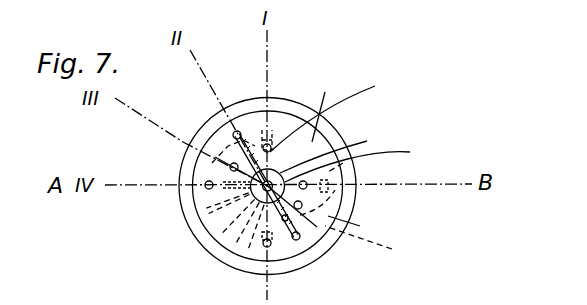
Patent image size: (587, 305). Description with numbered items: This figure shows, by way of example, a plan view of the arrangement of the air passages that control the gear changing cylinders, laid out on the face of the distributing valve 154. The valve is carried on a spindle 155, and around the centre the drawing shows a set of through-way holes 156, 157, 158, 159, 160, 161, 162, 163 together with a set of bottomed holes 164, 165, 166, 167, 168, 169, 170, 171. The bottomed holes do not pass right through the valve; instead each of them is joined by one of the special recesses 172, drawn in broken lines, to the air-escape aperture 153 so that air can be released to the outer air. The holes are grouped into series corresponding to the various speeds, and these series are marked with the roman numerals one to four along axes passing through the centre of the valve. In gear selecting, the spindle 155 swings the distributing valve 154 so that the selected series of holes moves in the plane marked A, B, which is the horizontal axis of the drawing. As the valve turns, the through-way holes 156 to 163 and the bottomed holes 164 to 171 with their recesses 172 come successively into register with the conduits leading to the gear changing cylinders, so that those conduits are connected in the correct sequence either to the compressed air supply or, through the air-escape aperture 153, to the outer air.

The air-escape aperture 153 is at (243, 249).
The distributing valve 154 is at (340, 112).
The spindle 155 is at (342, 148).
The through-way hole 156 is at (336, 107).
The through-way hole 157 is at (297, 239).
The through-way hole 158 is at (240, 132).
The through-way hole 159 is at (299, 239).
The through-way hole 160 is at (215, 157).
The through-way hole 161 is at (302, 205).
The through-way hole 162 is at (258, 190).
The through-way hole 163 is at (364, 164).
The bottomed hole 164 is at (272, 128).
The bottomed hole 165 is at (268, 206).
The bottomed hole 166 is at (222, 142).
The bottomed hole 167 is at (377, 243).
The bottomed hole 168 is at (180, 140).
The bottomed hole 169 is at (363, 226).
The bottomed hole 170 is at (212, 206).
The bottomed hole 171 is at (306, 185).
The special recesses 172 is at (280, 157).